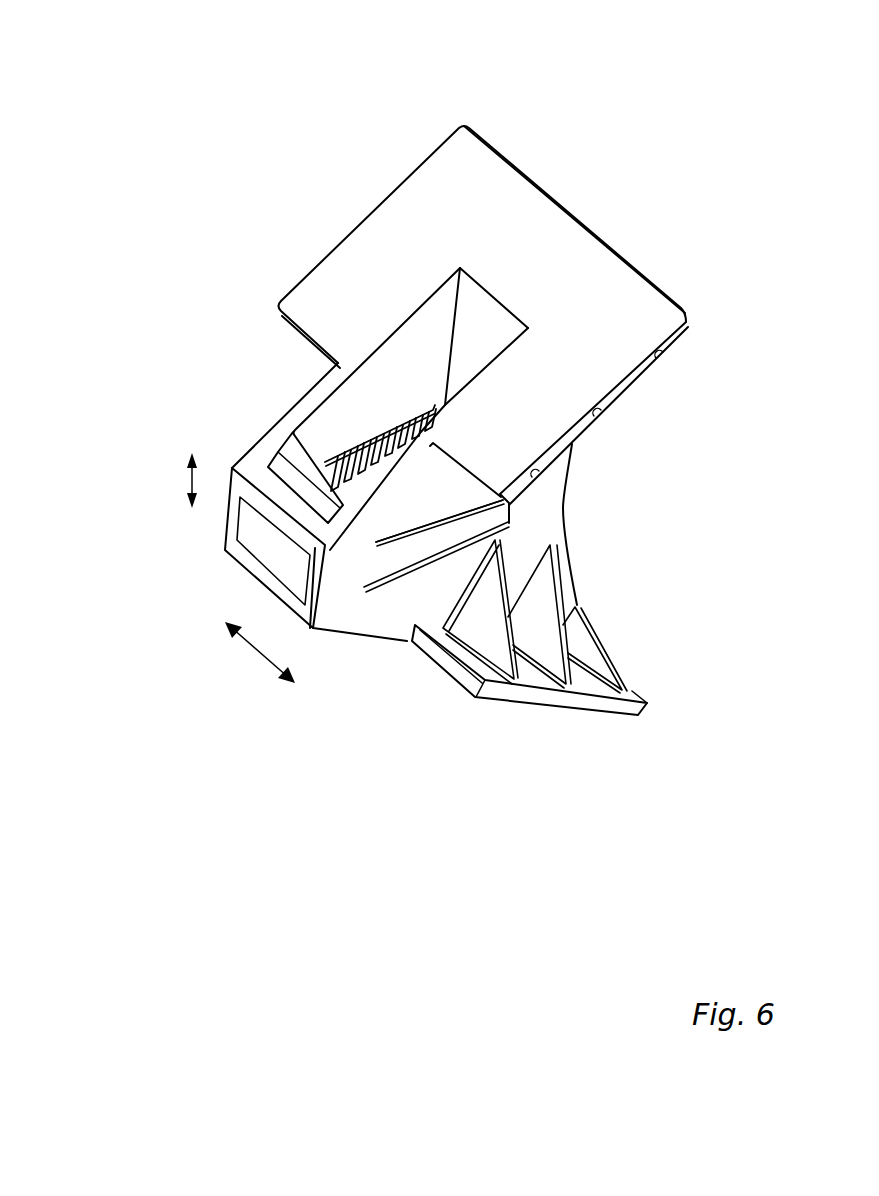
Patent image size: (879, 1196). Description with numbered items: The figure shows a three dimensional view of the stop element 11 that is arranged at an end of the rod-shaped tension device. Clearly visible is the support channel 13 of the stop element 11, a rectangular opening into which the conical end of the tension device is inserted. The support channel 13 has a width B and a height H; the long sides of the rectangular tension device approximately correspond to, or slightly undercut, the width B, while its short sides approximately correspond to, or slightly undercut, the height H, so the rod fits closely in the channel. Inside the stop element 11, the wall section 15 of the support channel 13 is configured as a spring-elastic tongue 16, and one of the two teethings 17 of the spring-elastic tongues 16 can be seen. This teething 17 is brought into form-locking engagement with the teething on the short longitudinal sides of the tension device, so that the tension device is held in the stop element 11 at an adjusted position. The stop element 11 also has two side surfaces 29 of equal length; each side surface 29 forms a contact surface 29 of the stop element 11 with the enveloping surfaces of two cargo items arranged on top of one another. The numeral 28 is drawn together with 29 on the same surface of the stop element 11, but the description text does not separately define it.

The stop element 11 is at (684, 100).
The support channel 13 is at (284, 554).
The wall section 15 is at (413, 546).
The spring-elastic tongue 16 is at (439, 521).
The teething 17 is at (355, 452).
The top plate 28 is at (381, 240).
The side surface / contact surface 29 is at (574, 219).
The height of the support channel H is at (190, 480).
The width of the support channel B is at (247, 645).